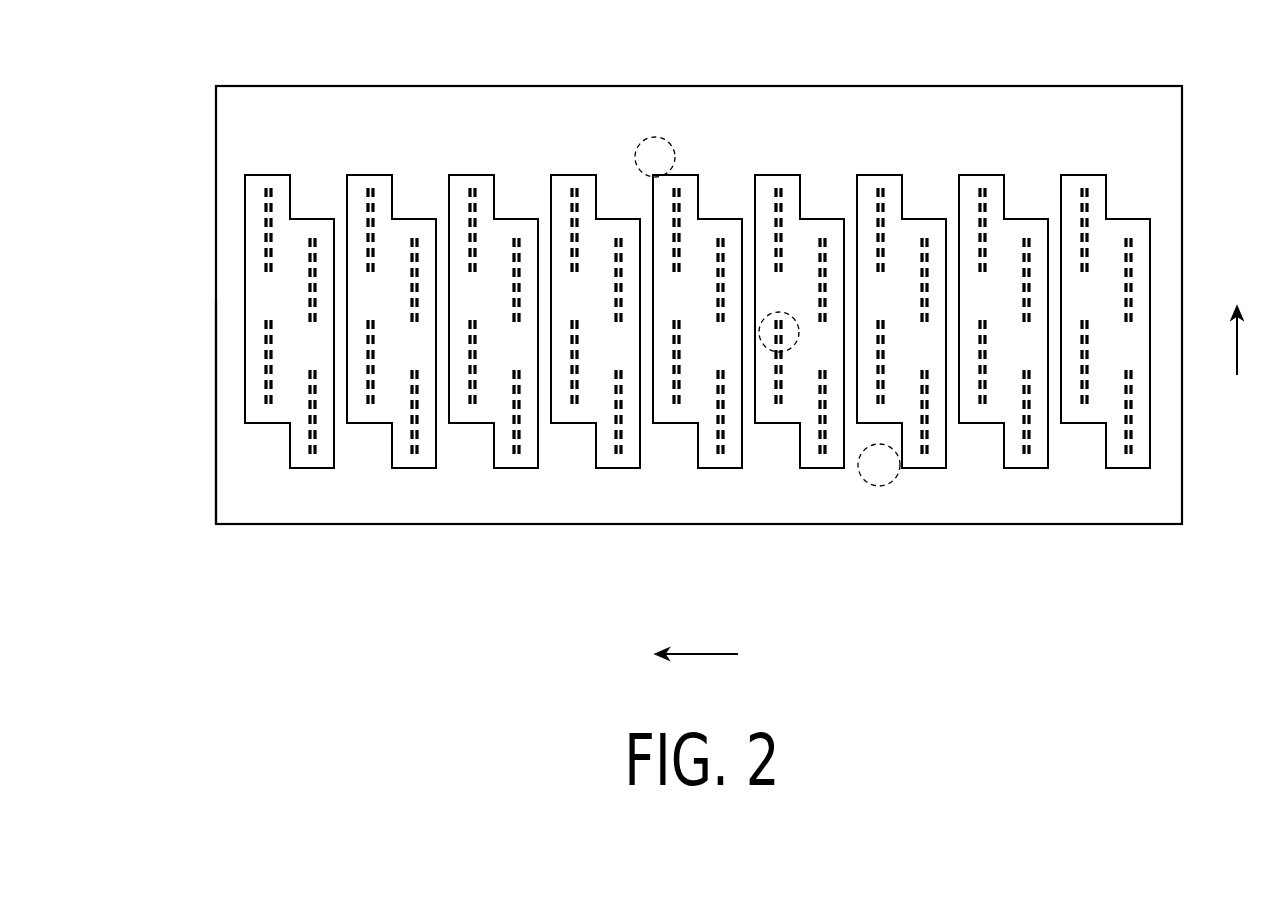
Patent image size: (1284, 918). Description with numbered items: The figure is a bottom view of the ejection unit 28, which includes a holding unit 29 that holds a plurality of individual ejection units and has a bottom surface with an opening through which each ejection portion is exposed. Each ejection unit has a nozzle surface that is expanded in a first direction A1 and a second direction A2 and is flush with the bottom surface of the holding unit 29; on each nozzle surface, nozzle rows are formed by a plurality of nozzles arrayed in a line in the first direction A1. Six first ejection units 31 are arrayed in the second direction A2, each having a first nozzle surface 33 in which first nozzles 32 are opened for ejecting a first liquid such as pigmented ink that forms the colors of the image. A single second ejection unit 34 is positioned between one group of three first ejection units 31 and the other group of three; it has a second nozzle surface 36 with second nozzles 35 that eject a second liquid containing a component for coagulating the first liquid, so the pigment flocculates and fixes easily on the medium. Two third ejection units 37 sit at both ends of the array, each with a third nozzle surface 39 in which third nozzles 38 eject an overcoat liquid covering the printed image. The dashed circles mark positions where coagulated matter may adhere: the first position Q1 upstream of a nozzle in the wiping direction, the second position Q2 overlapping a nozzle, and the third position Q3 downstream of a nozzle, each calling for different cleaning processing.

The ejection unit 28 is at (206, 143).
The holding unit 29 is at (216, 470).
The first ejection unit 31 is at (377, 175).
The first nozzle 32 is at (407, 428).
The first nozzle surface 33 is at (395, 240).
The second ejection unit 34 is at (688, 175).
The second nozzle 35 is at (713, 428).
The second nozzle surface 36 is at (699, 240).
The third ejection unit 37 is at (275, 175).
The third nozzle 38 is at (305, 428).
The third nozzle surface 39 is at (293, 240).
The first position Q1 is at (876, 490).
The second position Q2 is at (797, 322).
The third position Q3 is at (652, 138).
The first direction A1 is at (1251, 340).
The second direction A2 is at (696, 671).